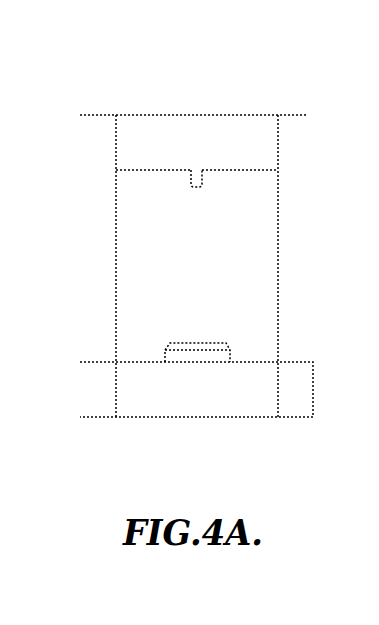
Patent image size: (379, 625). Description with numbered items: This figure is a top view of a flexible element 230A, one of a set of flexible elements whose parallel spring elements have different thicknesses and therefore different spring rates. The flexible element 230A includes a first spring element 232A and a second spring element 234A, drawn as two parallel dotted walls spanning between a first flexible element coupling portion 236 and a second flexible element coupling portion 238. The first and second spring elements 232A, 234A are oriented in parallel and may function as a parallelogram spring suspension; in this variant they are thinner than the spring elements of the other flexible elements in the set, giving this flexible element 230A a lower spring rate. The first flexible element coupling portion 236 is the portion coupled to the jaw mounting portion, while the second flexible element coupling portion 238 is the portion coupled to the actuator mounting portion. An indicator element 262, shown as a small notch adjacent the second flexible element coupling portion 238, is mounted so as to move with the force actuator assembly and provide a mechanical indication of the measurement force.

The flexible element 230A is at (270, 78).
The first spring element 232A is at (116, 267).
The second spring element 234A is at (278, 263).
The first flexible element coupling portion 236 is at (205, 418).
The second flexible element coupling portion 238 is at (203, 113).
The indicator element 262 is at (199, 189).